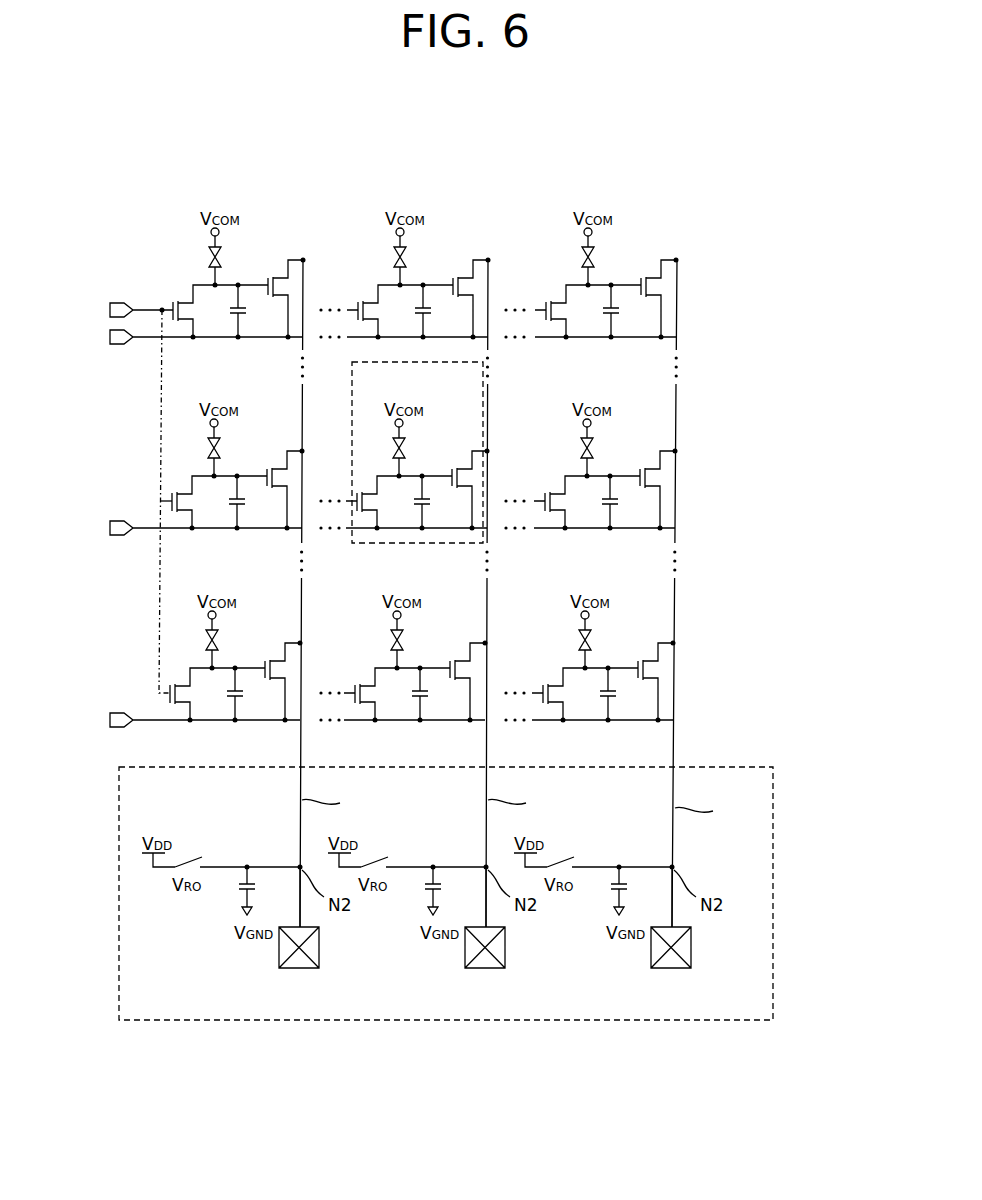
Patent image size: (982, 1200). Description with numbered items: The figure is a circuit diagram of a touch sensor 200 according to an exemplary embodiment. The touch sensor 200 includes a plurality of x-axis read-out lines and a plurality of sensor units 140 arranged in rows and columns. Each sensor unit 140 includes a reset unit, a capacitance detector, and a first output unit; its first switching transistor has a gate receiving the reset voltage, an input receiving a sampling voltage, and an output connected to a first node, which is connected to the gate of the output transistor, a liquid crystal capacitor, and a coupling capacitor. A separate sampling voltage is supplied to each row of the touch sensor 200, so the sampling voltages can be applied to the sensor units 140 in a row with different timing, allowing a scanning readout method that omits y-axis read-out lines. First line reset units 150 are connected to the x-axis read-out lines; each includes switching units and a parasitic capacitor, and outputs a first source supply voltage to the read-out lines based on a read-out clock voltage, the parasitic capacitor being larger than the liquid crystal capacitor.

The touch sensor 200 is at (145, 200).
The sensor unit 140 is at (352, 400).
The first line reset unit 150 is at (773, 806).